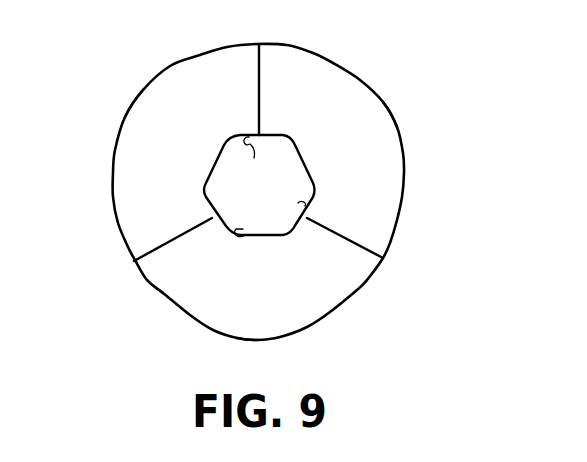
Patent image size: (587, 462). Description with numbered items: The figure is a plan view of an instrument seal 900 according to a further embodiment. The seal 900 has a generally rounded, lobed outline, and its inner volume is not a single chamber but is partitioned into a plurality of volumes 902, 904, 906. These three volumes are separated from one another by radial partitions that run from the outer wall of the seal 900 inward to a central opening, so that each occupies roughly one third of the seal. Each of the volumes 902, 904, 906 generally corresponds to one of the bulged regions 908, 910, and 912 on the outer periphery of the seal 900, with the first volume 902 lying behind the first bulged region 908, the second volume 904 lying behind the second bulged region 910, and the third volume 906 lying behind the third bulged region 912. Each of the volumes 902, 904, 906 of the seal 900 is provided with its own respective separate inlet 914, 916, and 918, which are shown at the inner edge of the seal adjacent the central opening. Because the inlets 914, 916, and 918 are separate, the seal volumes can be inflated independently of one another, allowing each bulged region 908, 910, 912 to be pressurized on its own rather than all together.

The seal 900 is at (202, 55).
The volume 902 is at (193, 155).
The volume 904 is at (355, 153).
The volume 906 is at (278, 290).
The bulged region 908 is at (122, 100).
The bulged region 910 is at (395, 103).
The bulged region 912 is at (268, 347).
The inlet 914 is at (246, 164).
The inlet 916 is at (298, 203).
The inlet 918 is at (245, 235).